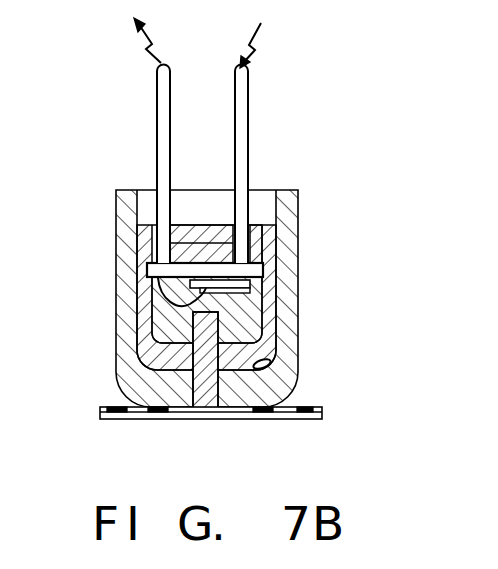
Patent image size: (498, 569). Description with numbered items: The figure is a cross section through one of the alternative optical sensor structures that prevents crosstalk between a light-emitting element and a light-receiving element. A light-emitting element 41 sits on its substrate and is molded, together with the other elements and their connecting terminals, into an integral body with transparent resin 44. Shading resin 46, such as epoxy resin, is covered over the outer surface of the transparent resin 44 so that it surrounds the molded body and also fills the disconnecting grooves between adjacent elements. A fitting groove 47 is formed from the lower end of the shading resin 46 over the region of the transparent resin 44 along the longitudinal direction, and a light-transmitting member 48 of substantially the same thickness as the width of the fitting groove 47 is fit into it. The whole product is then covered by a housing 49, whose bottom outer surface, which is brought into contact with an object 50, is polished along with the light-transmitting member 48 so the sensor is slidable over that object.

The light-emitting element 41 is at (180, 305).
The transparent resin 44 is at (285, 274).
The shading resin 46 is at (270, 300).
The fitting groove 47 is at (216, 323).
The light-transmitting member 48 is at (270, 363).
The housing 49 is at (284, 190).
The object 50 is at (294, 420).